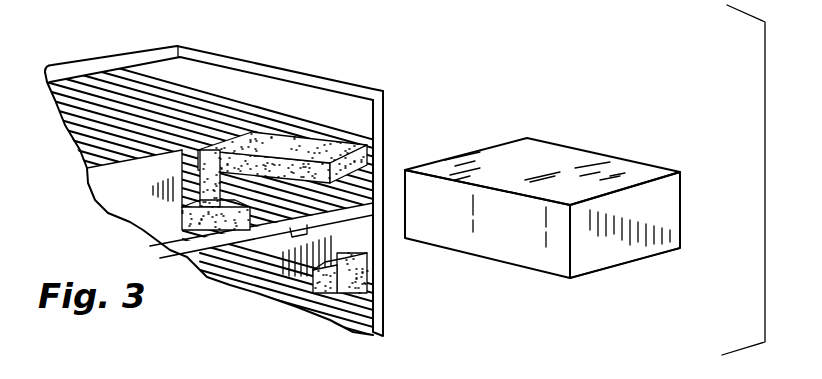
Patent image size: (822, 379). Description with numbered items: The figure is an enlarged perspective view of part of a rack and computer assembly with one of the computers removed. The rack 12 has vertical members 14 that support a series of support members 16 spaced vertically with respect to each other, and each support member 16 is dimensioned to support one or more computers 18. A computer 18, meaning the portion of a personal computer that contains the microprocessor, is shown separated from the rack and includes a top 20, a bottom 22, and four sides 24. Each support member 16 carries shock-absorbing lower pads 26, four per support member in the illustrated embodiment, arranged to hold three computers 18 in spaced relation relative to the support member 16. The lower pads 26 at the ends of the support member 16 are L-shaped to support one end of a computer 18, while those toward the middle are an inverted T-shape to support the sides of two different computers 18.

The rack 12 is at (263, 66).
The vertical member 14 is at (378, 97).
The support member 16 is at (233, 230).
The computer 18 is at (648, 154).
The top 20 is at (540, 150).
The bottom 22 is at (650, 213).
The side 24 is at (614, 276).
The lower pad 26 is at (372, 160).